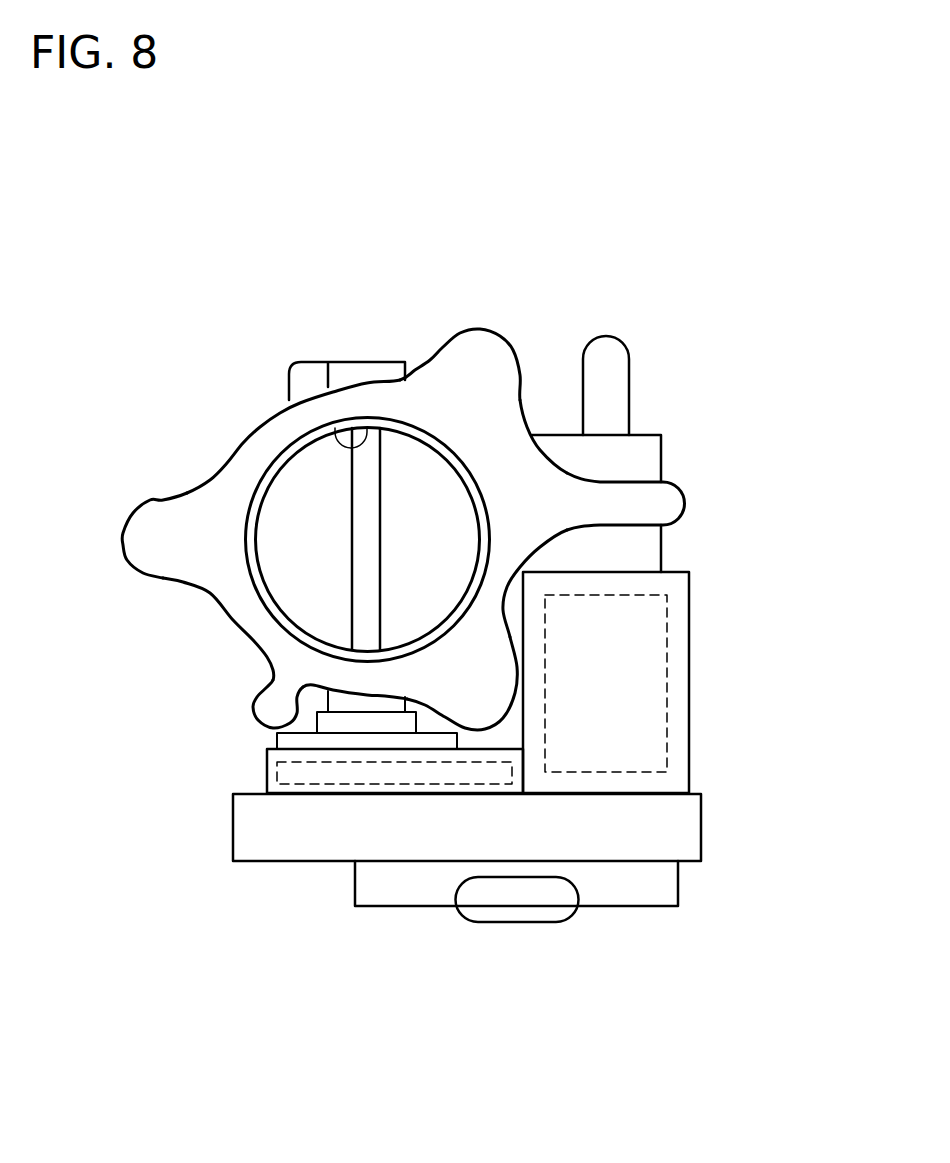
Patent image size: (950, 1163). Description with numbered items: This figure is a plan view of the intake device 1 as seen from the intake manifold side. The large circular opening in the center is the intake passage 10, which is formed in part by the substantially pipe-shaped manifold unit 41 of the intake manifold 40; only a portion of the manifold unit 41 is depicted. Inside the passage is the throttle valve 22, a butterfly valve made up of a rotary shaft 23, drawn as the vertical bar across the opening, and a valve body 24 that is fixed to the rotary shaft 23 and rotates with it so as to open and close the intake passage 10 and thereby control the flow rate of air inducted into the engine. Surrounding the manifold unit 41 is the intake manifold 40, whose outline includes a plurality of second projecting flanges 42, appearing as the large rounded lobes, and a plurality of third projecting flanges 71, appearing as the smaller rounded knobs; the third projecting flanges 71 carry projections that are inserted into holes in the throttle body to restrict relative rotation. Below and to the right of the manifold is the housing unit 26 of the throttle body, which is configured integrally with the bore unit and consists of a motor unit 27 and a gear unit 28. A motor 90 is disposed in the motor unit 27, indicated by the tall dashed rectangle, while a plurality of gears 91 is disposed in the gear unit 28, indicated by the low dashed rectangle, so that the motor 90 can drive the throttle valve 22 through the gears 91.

The intake device 1 is at (776, 347).
The intake passage 10 is at (366, 427).
The throttle valve 22 is at (327, 453).
The rotary shaft 23 is at (300, 493).
The valve body 24 is at (365, 492).
The housing unit 26 is at (516, 900).
The motor unit 27 is at (552, 782).
The gear unit 28 is at (460, 772).
The intake manifold 40 is at (422, 352).
The manifold unit 41 is at (248, 538).
The second projecting flange 42 is at (480, 340).
The third projecting flange 71 is at (670, 503).
The motor 90 is at (638, 772).
The gears 91 is at (282, 762).